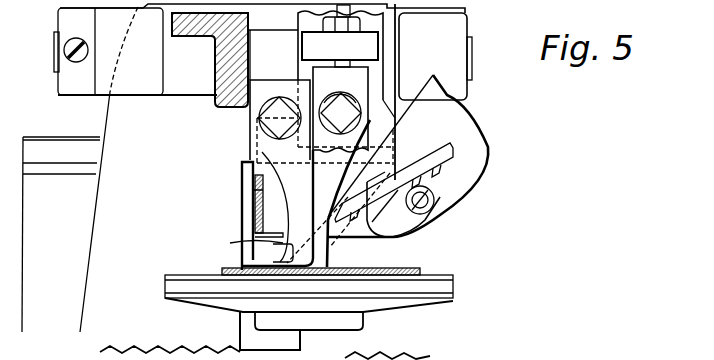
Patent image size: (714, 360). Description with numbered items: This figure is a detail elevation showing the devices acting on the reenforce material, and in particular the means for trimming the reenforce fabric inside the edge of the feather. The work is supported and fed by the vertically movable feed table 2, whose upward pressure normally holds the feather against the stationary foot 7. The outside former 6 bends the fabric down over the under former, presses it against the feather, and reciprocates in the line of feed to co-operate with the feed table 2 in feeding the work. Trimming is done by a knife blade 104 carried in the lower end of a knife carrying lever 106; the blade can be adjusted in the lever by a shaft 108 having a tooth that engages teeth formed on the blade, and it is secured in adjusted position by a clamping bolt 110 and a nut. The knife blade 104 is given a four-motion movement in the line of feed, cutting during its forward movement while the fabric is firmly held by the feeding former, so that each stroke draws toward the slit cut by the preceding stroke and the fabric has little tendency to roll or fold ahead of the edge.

The feed table 2 is at (454, 287).
The outside former 6 is at (330, 253).
The stationary foot 7 is at (250, 240).
The knife blade 104 is at (243, 256).
The knife carrying lever 106 is at (478, 170).
The shaft 108 is at (452, 207).
The clamping bolt 110 is at (410, 232).